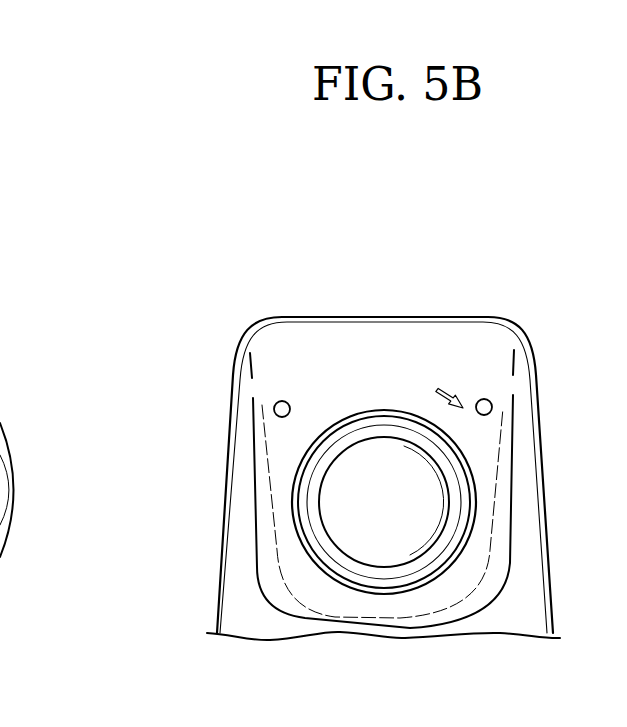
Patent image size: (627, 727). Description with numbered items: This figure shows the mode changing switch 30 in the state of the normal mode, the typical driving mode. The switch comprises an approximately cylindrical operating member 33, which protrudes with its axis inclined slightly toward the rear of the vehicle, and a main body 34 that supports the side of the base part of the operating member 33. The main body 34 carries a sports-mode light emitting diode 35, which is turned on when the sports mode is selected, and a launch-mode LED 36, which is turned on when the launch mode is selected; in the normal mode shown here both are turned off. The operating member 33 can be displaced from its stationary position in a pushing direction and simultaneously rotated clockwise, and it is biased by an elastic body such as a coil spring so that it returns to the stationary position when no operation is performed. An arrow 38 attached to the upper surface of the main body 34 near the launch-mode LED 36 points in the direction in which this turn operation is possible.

The mode changing switch 30 is at (418, 296).
The operating member 33 is at (440, 507).
The main body 34 is at (367, 330).
The sports-mode light emitting diode (LED) 35 is at (273, 406).
The launch-mode LED 36 is at (492, 405).
The arrow 38 is at (450, 388).